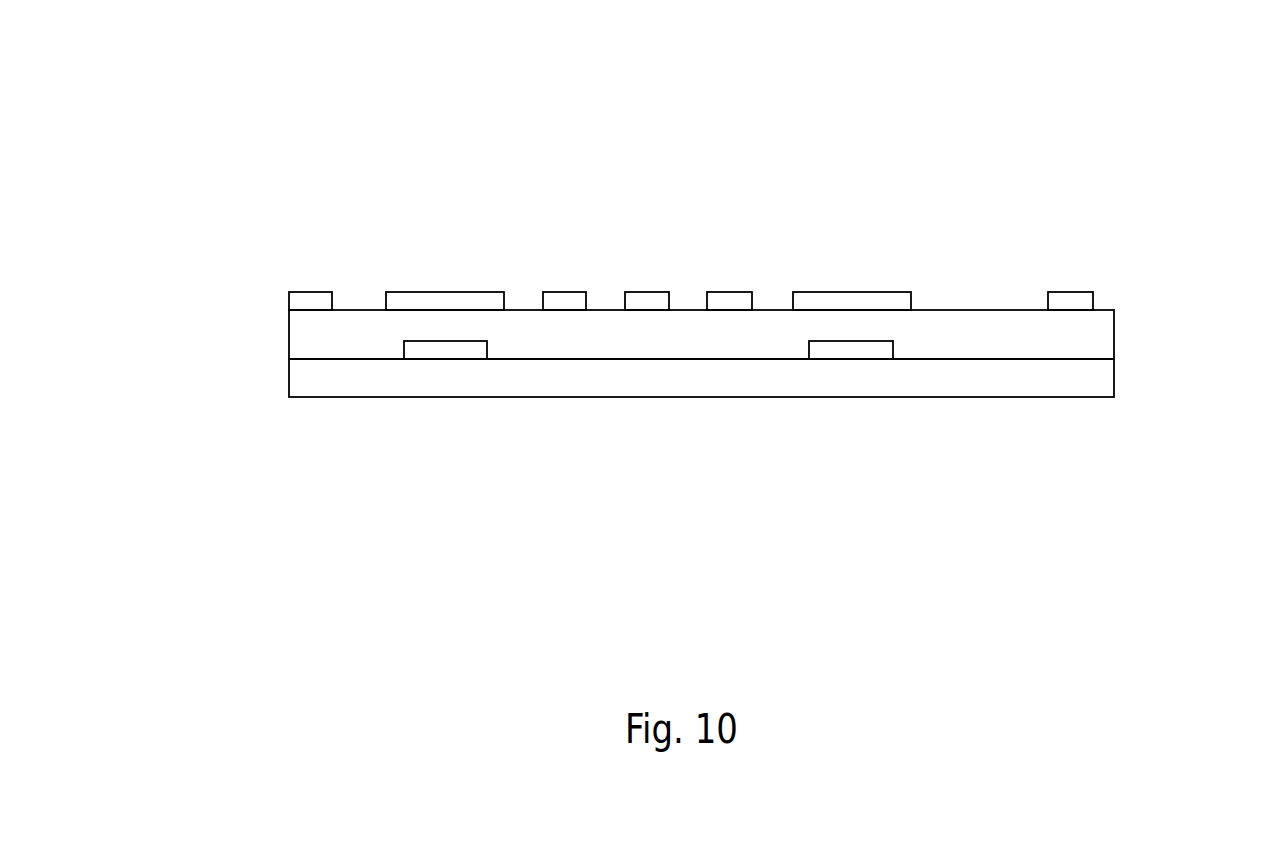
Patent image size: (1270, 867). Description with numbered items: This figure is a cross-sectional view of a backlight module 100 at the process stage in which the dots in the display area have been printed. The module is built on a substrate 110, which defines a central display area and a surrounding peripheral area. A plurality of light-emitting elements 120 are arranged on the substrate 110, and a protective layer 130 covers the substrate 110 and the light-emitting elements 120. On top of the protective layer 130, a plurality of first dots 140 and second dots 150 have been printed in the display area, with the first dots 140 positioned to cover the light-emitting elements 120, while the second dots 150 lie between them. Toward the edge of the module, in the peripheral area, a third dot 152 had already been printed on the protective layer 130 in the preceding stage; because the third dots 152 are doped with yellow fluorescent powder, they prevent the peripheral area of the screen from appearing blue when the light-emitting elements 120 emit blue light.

The backlight module 100 is at (153, 94).
The substrate 110 is at (1114, 380).
The light-emitting elements 120 is at (809, 350).
The protective layer 130 is at (1114, 332).
The first dots 140 is at (852, 292).
The second dots 150 is at (722, 292).
The third dots 152 is at (1070, 292).